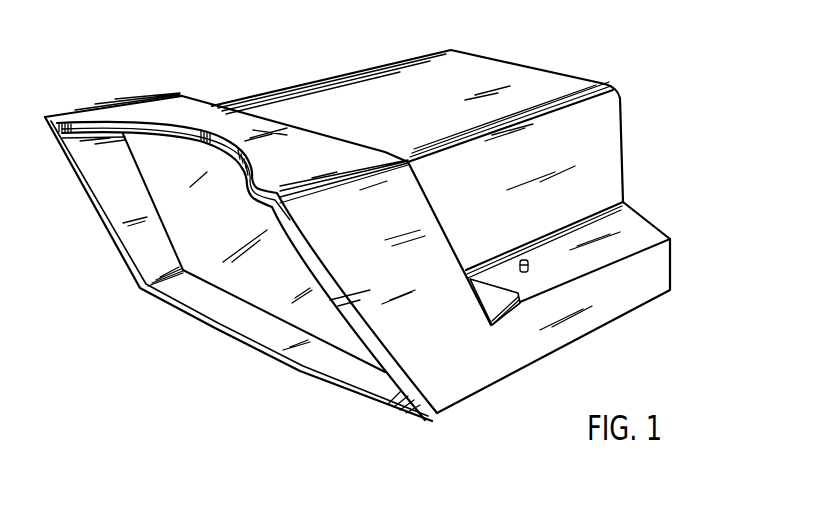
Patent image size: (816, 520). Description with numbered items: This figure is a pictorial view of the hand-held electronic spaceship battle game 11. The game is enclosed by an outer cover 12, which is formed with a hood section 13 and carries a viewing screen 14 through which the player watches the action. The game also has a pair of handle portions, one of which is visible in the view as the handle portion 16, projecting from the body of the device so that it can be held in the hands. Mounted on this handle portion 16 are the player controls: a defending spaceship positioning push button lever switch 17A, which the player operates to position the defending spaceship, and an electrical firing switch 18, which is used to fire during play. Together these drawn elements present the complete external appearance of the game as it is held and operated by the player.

The hand-held electronic spaceship battle game 11 is at (608, 64).
The outer cover 12 is at (399, 115).
The hood section 13 is at (452, 366).
The viewing screen 14 is at (268, 292).
The handle portion 16 is at (638, 236).
The defending spaceship positioning push button lever switch 17A is at (500, 306).
The electrical firing switch 18 is at (532, 264).